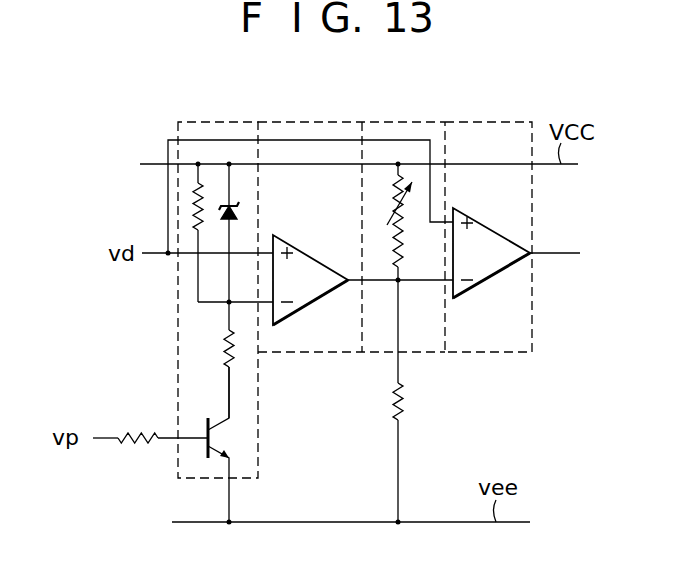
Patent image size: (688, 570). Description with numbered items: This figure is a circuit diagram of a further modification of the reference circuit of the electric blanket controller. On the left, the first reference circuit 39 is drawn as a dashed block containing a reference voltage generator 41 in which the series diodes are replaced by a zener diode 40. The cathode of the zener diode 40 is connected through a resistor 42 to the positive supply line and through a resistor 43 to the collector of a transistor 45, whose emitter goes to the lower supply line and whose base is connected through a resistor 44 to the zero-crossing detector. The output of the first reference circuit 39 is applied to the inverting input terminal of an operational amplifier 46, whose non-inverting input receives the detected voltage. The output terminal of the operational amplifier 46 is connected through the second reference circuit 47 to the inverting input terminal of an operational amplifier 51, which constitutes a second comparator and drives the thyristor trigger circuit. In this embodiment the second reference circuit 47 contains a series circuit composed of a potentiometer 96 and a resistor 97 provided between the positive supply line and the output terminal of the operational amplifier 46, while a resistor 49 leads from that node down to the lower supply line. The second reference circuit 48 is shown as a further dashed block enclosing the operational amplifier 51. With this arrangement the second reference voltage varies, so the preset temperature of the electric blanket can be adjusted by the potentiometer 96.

The first reference circuit 39 is at (224, 122).
The zener diode 40 is at (240, 209).
The reference voltage generator 41 is at (240, 190).
The resistor 42 is at (186, 206).
The resistor 43 is at (224, 345).
The resistor 44 is at (137, 447).
The transistor 45 is at (232, 438).
The operational amplifier 46 is at (329, 292).
The second reference circuit 47 is at (412, 122).
The second reference circuit 48 is at (413, 227).
The resistor 49 is at (394, 396).
The operational amplifier 51 is at (497, 232).
The potentiometer 96 is at (383, 193).
The resistor 97 is at (386, 245).